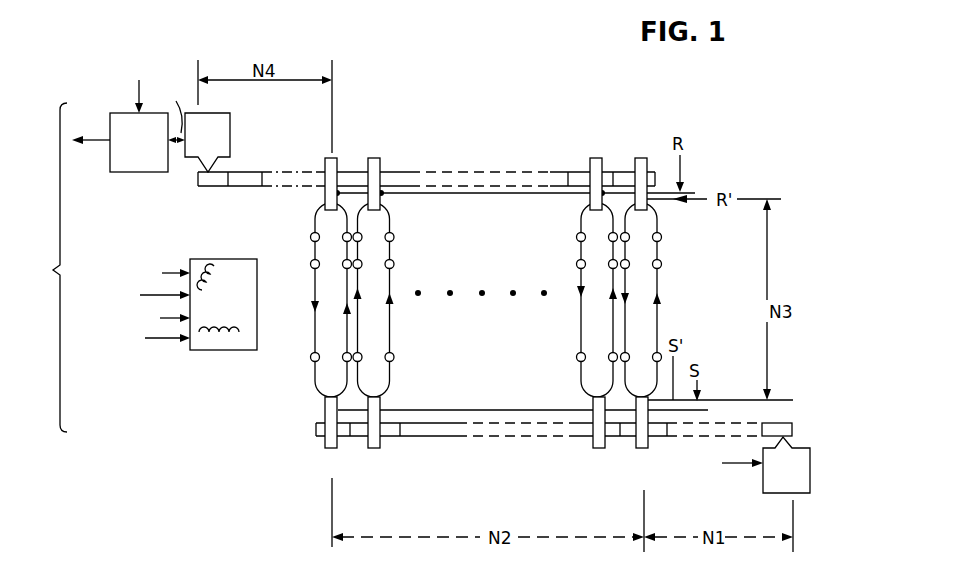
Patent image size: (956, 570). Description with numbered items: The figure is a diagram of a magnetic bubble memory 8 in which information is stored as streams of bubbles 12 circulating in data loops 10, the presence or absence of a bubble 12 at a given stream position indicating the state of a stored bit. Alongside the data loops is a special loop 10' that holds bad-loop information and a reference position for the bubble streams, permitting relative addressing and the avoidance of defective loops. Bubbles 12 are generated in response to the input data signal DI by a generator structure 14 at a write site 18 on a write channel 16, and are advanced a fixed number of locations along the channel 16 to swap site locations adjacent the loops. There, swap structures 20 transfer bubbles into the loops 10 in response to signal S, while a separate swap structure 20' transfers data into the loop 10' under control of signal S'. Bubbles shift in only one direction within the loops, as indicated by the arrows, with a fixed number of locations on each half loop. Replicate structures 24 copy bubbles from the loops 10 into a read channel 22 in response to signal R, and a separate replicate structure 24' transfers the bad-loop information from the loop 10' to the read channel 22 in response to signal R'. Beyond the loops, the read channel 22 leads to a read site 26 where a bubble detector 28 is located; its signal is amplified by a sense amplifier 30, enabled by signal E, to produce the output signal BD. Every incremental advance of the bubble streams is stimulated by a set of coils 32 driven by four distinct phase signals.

The magnetic bubble memory 8 is at (53, 267).
The data loop 10 is at (464, 300).
The special loop 10' is at (665, 300).
The bubble 12 is at (579, 238).
The generator structure 14 is at (763, 490).
The write channel 16 is at (355, 443).
The write site 18 is at (781, 422).
The swap structure 20 is at (465, 431).
The separate swap structure 20' is at (632, 441).
The read channel 22 is at (252, 166).
The replicate structure 24 is at (465, 163).
The separate replicate structure 24' is at (649, 158).
The read site 26 is at (217, 187).
The bubble detector 28 is at (230, 130).
The sense amplifier 30 is at (133, 172).
The set of coils 32 is at (222, 350).